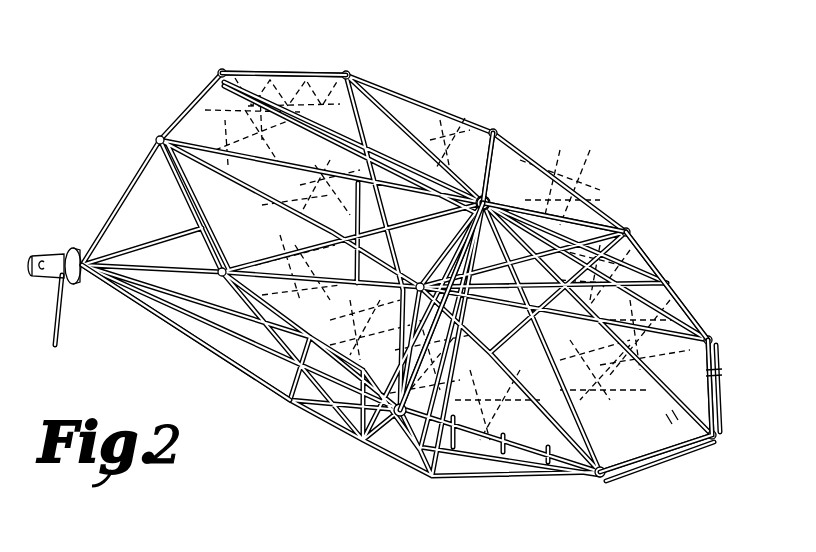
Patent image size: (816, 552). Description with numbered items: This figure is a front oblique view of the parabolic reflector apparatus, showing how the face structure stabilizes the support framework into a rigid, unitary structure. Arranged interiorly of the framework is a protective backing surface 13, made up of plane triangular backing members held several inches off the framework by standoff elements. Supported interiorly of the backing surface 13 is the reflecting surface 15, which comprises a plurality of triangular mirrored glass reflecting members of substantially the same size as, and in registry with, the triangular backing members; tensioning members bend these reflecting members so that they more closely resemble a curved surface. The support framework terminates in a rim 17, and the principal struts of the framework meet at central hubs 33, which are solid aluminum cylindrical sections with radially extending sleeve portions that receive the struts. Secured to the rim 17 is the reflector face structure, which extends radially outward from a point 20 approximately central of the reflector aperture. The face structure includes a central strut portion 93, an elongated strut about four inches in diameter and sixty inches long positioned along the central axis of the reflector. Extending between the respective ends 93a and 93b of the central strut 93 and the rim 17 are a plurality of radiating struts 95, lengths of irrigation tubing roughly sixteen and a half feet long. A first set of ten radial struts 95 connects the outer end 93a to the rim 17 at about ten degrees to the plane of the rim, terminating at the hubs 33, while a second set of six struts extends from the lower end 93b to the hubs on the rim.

The protective backing surface 13 is at (260, 373).
The reflecting surface 15 is at (456, 150).
The rim 17 is at (311, 72).
The point 20 is at (481, 195).
The central hubs 33 is at (710, 336).
The central strut portion 93 is at (524, 213).
The outer end of central strut 93a is at (497, 195).
The lower end of central strut 93b is at (470, 245).
The radiating struts 95 is at (722, 372).